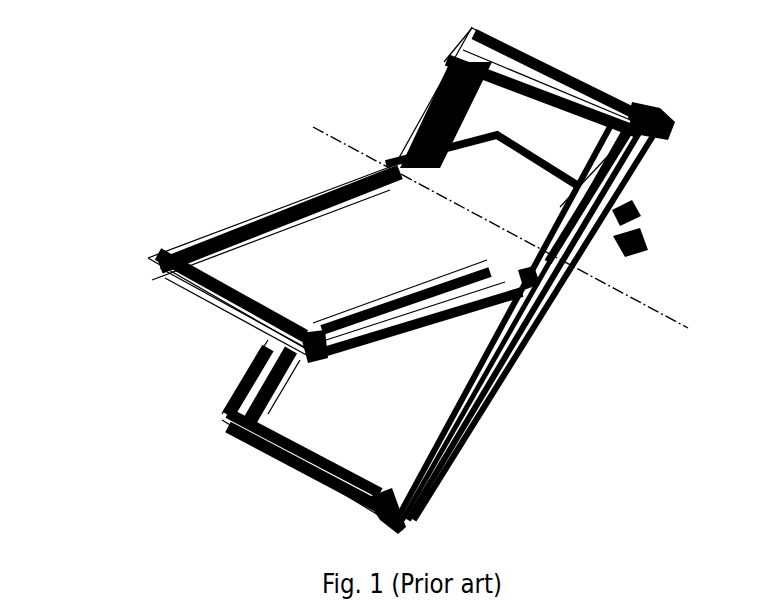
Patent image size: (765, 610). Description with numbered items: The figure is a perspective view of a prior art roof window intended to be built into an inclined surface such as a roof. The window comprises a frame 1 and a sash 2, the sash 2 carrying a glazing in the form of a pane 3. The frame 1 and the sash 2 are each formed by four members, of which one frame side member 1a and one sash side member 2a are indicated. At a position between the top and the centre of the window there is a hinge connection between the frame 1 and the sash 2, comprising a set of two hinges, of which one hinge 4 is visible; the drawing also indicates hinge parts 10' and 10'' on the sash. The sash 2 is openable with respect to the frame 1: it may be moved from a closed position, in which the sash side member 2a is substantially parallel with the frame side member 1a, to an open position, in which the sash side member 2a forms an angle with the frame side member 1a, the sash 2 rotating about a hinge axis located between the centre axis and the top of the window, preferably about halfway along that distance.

The frame 1 is at (215, 410).
The frame side member 1a is at (462, 435).
The sash 2 is at (204, 231).
The sash side member 2a is at (646, 248).
The pane 3 is at (400, 248).
The hinge 4 is at (521, 288).
The first hinge part 10' is at (417, 317).
The second hinge part 10'' is at (623, 191).